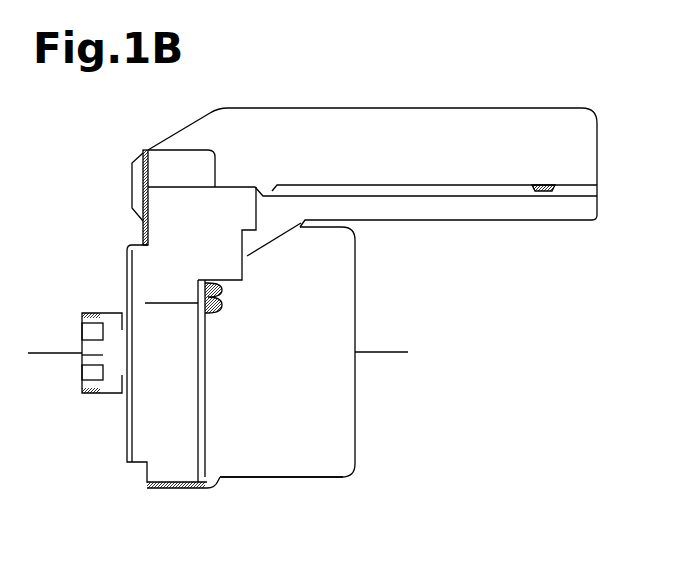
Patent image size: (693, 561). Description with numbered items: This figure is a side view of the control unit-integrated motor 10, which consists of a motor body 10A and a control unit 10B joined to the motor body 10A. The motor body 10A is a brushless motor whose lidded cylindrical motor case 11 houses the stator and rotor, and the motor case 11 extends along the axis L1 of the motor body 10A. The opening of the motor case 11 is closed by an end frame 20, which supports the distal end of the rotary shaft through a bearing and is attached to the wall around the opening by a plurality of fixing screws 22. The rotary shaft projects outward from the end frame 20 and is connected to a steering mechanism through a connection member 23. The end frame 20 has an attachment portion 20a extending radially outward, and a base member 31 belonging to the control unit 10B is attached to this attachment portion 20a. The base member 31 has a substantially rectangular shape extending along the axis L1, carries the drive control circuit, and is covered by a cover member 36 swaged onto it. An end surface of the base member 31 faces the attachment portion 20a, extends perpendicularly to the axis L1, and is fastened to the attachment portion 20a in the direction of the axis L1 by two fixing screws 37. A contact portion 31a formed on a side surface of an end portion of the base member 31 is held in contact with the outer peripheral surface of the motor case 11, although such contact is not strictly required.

The motor 10 is at (517, 345).
The motor body 10A is at (355, 300).
The control unit 10B is at (597, 148).
The motor case 11 is at (283, 470).
The end frame 20 is at (118, 255).
The attachment portion 20a is at (165, 148).
The fixing screws 22 is at (222, 300).
The connection member 23 is at (90, 312).
The base member 31 is at (497, 221).
The contact portion 31a is at (276, 240).
The cover member 36 is at (482, 110).
The fixing screws 37 is at (135, 205).
The axis L1 is at (380, 352).